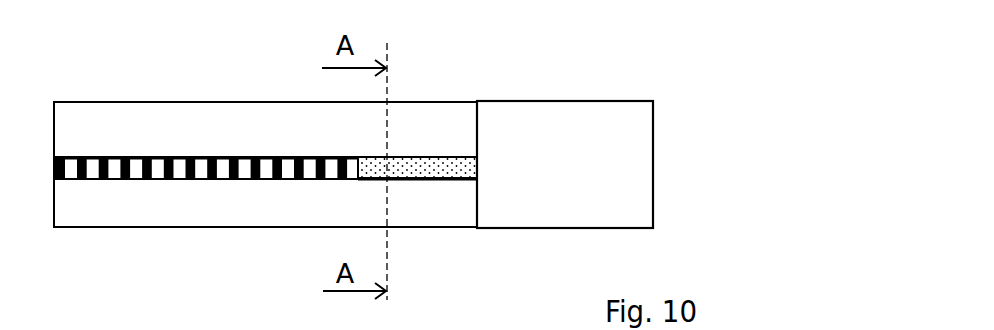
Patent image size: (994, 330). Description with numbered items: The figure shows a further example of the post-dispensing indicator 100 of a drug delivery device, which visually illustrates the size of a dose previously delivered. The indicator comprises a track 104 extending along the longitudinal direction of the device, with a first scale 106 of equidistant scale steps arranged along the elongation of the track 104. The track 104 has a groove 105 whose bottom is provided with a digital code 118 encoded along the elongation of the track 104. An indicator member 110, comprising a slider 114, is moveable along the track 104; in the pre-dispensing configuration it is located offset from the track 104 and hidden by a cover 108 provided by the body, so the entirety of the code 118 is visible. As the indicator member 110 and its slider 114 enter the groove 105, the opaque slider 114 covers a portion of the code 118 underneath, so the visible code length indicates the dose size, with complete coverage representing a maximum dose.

The post-dispensing indicator 100 is at (353, 169).
The track 104 is at (170, 197).
The groove 105 is at (149, 133).
The first scale 106 is at (210, 148).
The cover 108 is at (573, 208).
The indicator member 110 is at (423, 167).
The slider 114 is at (450, 168).
The code 118 is at (258, 198).